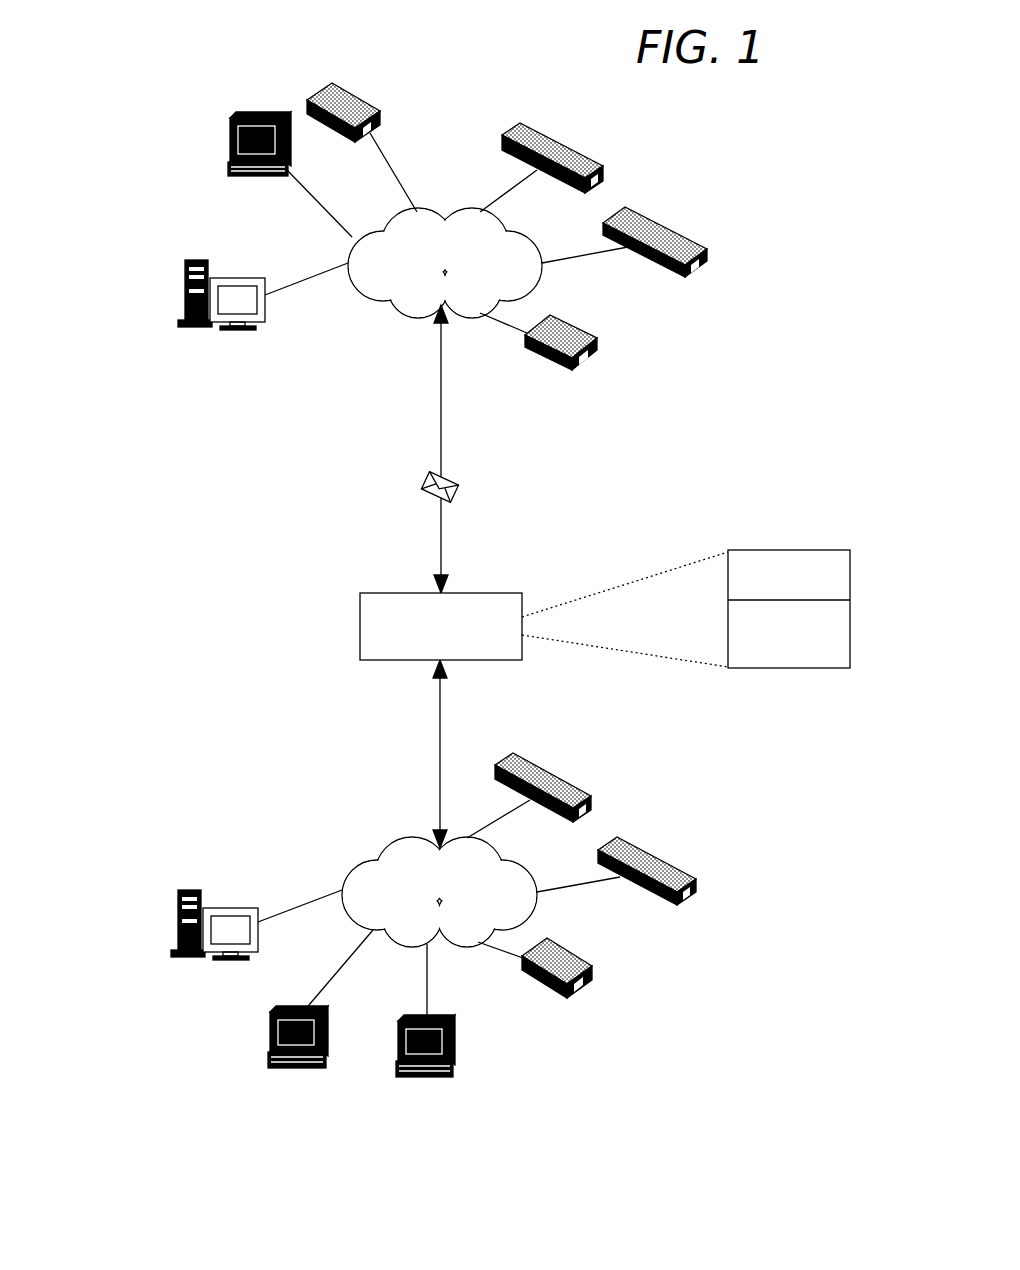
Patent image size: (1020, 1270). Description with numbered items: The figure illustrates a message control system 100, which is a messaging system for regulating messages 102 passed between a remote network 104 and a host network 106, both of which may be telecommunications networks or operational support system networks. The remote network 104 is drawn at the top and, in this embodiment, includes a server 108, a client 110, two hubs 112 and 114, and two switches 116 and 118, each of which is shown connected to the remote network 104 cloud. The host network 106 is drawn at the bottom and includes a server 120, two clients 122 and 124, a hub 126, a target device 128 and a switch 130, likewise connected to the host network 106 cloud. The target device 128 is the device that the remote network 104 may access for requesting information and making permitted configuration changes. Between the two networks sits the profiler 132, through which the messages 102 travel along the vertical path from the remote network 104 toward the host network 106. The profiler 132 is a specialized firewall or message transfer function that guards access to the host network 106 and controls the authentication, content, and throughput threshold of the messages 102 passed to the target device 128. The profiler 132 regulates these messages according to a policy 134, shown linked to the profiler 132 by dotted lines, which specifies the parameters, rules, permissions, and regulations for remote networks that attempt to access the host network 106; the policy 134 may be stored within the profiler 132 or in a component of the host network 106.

The message control system 100 is at (58, 75).
The messages 102 is at (430, 530).
The remote network 104 is at (428, 260).
The host network 106 is at (423, 911).
The server 108 is at (238, 277).
The client 110 is at (260, 118).
The hub 112 is at (340, 84).
The hub 114 is at (595, 338).
The switch 116 is at (553, 141).
The switch 118 is at (672, 232).
The server 120 is at (230, 905).
The client 122 is at (327, 1063).
The client 124 is at (453, 1070).
The hub 126 is at (590, 967).
The target device 128 is at (665, 860).
The switch 130 is at (548, 768).
The profiler 132 is at (422, 649).
The policy 134 is at (770, 598).